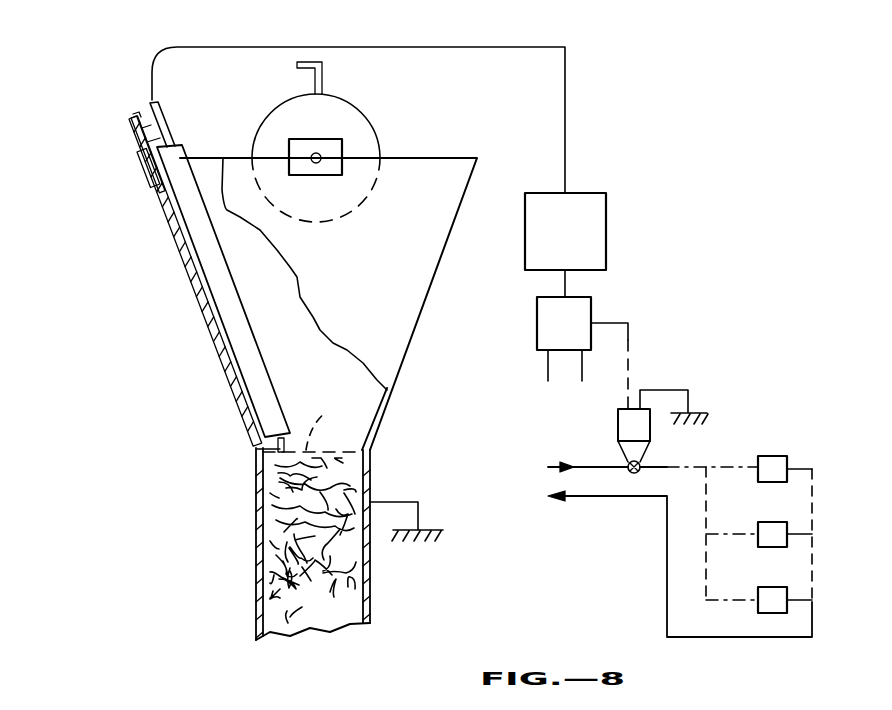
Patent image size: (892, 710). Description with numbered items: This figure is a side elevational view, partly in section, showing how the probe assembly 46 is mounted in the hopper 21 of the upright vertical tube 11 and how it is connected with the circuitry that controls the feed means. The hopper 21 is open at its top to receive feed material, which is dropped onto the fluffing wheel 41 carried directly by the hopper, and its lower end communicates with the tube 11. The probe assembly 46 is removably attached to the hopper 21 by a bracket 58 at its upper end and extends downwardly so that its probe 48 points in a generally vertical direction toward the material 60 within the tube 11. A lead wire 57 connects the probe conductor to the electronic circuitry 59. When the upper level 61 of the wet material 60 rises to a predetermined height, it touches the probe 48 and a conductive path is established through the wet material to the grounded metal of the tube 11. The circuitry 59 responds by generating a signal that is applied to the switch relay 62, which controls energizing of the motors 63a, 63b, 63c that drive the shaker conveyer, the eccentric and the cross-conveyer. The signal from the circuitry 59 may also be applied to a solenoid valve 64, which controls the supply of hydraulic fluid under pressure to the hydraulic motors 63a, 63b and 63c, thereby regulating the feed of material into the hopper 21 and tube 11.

The vertical tube 11 is at (372, 598).
The hopper 21 is at (420, 316).
The fluffing wheel 41 is at (363, 133).
The probe assembly 46 is at (220, 283).
The probe 48 is at (258, 452).
The lead wire 57 is at (152, 74).
The bracket 58 is at (138, 172).
The electronic circuitry 59 is at (597, 235).
The material 60 is at (343, 493).
The upper level 61 is at (325, 416).
The switch relay 62 is at (583, 310).
The hydraulic motor 63a is at (782, 454).
The hydraulic motor 63b is at (759, 520).
The hydraulic motor 63c is at (759, 587).
The solenoid valve 64 is at (622, 428).